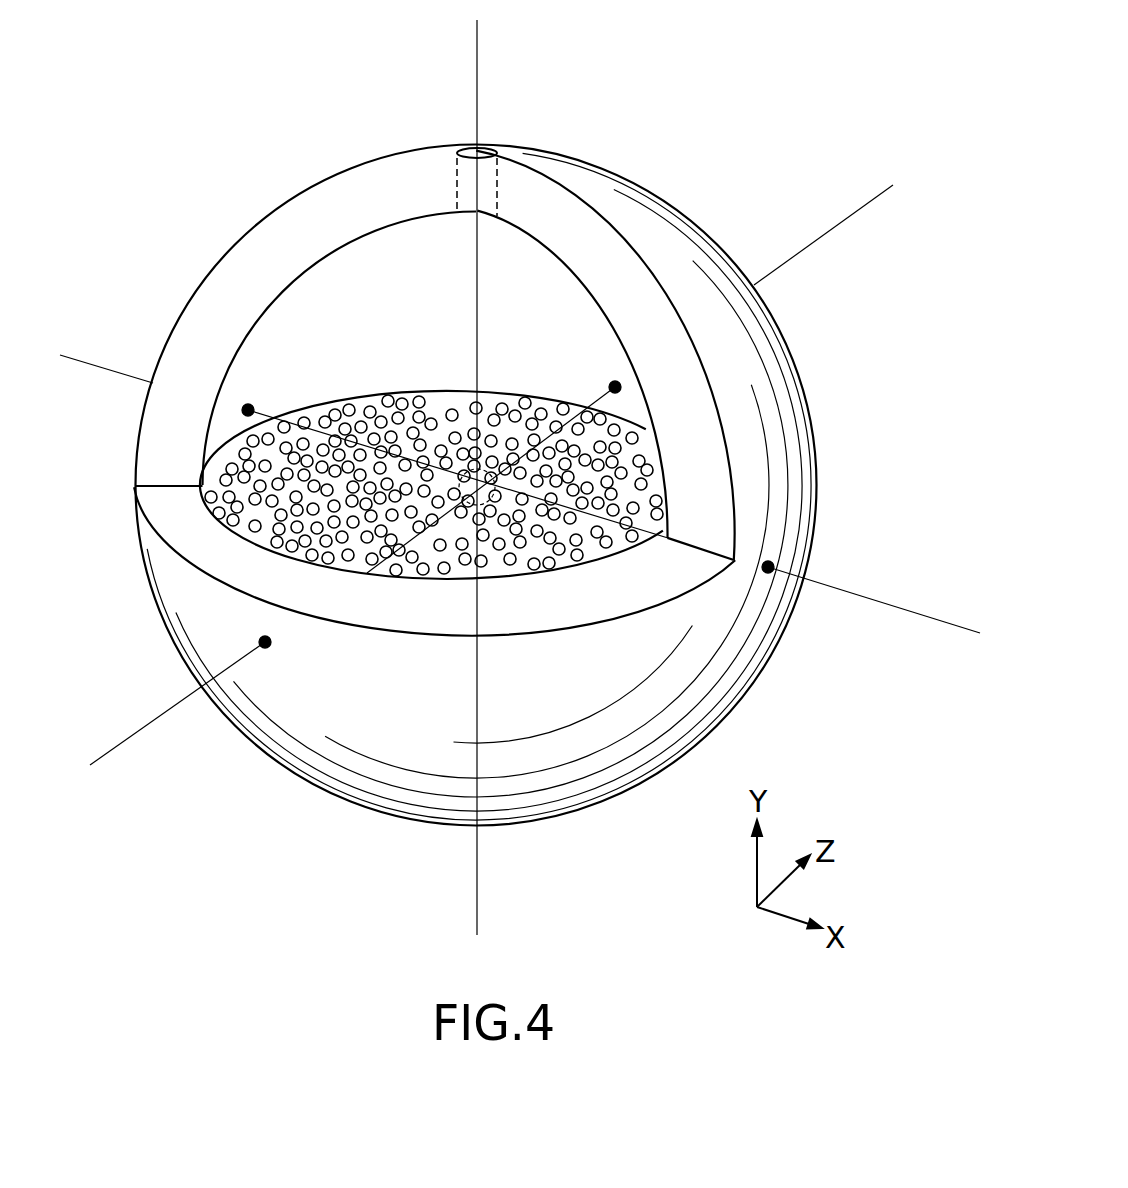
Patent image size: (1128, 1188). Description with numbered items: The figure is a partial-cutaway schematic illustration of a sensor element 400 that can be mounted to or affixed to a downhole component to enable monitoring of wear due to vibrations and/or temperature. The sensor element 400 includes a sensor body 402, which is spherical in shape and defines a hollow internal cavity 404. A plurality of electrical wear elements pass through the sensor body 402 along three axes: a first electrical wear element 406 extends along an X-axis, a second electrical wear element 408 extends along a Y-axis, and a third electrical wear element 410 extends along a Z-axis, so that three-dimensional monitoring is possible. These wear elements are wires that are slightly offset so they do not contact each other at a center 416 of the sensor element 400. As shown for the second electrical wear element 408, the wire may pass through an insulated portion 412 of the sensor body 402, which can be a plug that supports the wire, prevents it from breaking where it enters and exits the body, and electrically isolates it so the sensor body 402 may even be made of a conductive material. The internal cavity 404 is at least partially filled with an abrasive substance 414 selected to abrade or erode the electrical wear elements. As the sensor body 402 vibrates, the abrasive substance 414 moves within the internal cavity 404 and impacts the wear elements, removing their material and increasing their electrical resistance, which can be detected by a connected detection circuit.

The sensor element 400 is at (150, 114).
The sensor body 402 is at (690, 252).
The internal cavity 404 is at (320, 290).
The first electrical wear element 406 is at (882, 600).
The second electrical wear element 408 is at (477, 96).
The third electrical wear element 410 is at (890, 188).
The insulated portion 412 is at (455, 175).
The abrasive substance 414 is at (385, 425).
The center 416 is at (468, 502).